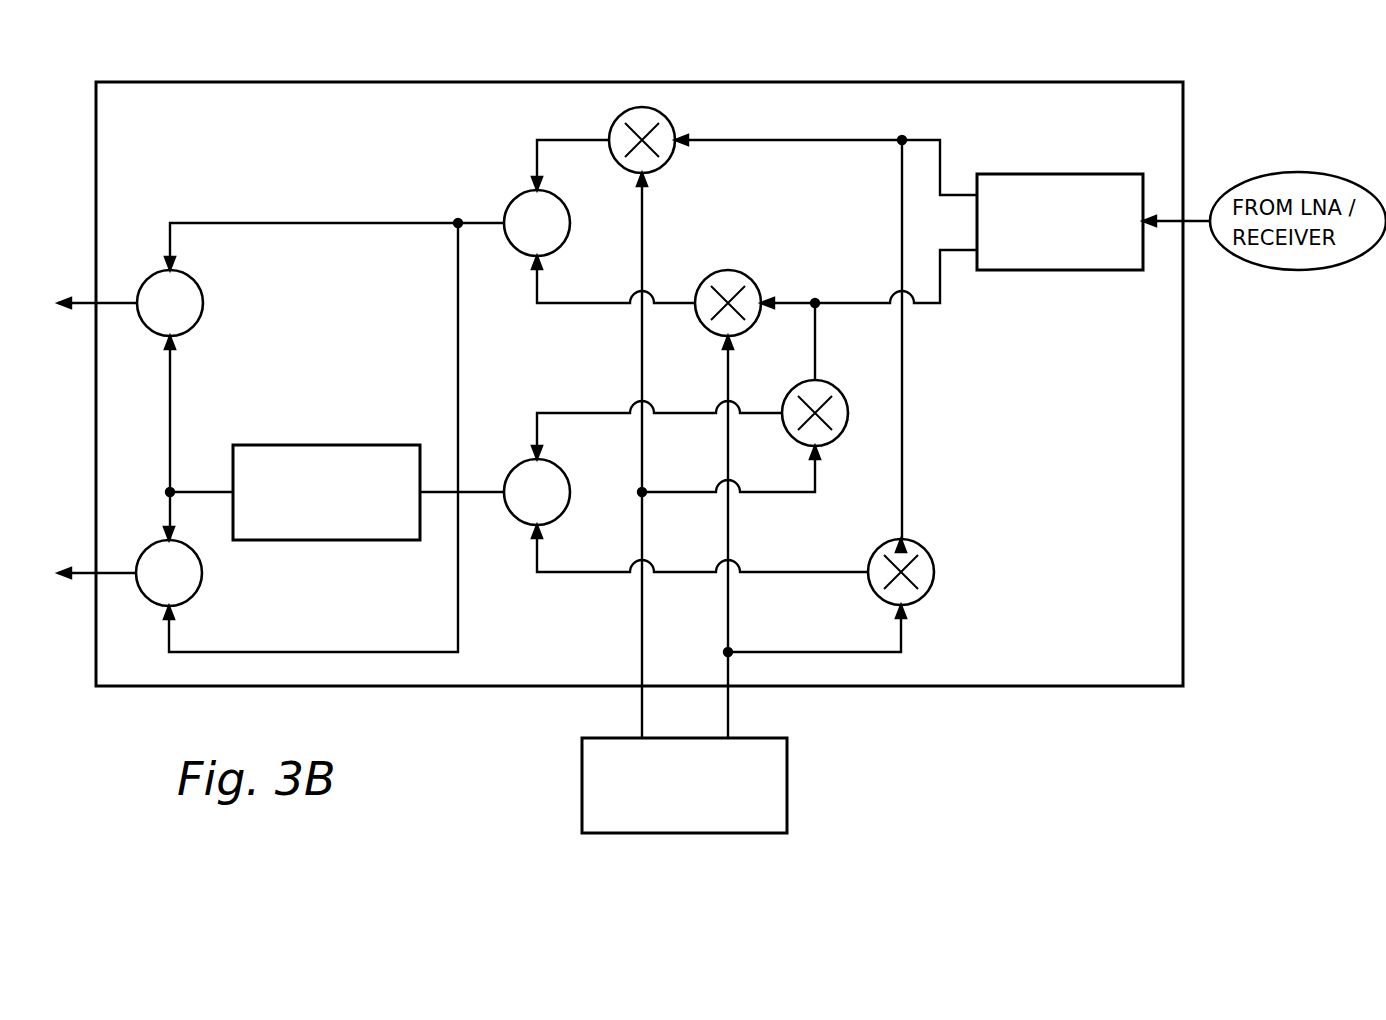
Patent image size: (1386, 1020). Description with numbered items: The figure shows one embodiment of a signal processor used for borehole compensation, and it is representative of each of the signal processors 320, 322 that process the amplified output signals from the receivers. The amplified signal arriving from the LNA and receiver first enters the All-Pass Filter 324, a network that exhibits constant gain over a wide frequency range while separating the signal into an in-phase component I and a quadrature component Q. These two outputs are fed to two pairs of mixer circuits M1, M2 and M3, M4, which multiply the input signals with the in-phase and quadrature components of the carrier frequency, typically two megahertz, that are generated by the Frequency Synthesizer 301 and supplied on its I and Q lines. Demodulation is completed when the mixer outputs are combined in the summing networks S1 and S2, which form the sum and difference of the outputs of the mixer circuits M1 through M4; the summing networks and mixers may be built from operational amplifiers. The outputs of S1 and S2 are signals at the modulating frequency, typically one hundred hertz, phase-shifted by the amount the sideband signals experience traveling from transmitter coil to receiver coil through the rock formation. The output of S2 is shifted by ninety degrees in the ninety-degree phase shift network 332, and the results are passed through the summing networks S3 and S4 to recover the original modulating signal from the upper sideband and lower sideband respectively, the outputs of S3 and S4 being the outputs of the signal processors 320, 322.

The signal processor 320 is at (634, 393).
The signal processor 322 is at (1018, 82).
The All-Pass Filter 324 is at (1055, 174).
The 90 phase shift network 332 is at (296, 445).
The Frequency Synthesizer 301 is at (787, 786).
The summing network S1 is at (558, 223).
The summing network S2 is at (558, 492).
The summing network S3 is at (190, 303).
The summing network S4 is at (190, 573).
The mixer circuit M1 is at (663, 135).
The mixer circuit M2 is at (749, 298).
The mixer circuit M3 is at (836, 409).
The mixer circuit M4 is at (921, 567).